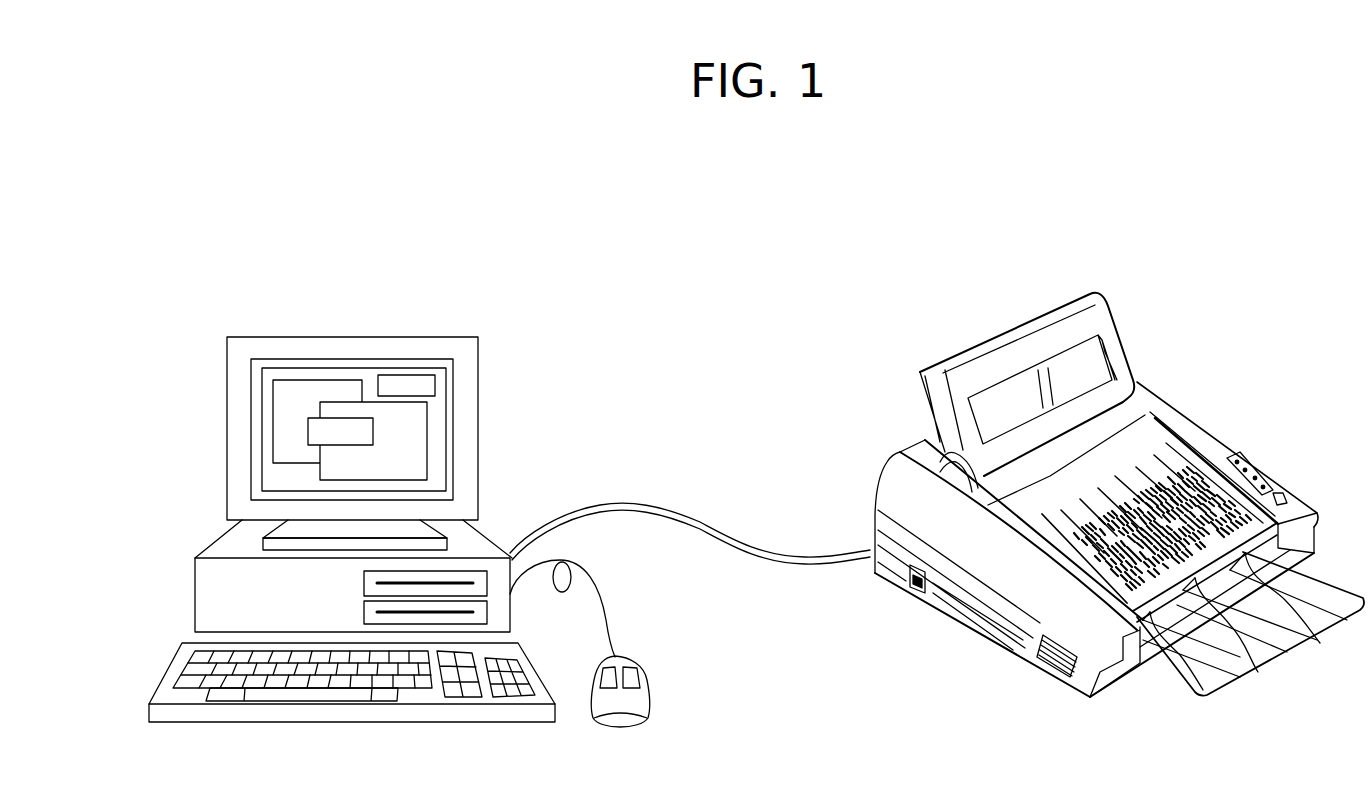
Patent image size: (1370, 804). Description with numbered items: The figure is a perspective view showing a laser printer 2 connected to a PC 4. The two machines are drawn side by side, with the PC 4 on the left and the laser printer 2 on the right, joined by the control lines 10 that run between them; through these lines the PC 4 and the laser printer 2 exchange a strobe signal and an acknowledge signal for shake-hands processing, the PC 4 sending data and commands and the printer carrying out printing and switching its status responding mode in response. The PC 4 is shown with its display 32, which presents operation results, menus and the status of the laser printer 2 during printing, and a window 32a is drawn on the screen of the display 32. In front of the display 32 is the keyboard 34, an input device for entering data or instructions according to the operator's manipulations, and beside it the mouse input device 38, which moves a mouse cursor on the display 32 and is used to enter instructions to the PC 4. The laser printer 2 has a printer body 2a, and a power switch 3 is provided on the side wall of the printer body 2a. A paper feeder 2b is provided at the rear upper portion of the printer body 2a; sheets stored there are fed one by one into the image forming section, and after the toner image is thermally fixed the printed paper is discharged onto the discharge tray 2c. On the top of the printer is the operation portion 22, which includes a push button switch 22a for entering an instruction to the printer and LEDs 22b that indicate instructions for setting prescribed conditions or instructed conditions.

The laser printer 2 is at (938, 273).
The printer body 2a is at (973, 600).
The paper feeder 2b is at (1063, 327).
The discharge tray 2c is at (1293, 633).
The power switch 3 is at (910, 590).
The PC 4 is at (480, 268).
The control lines 10 is at (713, 521).
The operation portion 22 is at (1233, 453).
The push button switch 22a is at (1283, 492).
The LEDs 22b is at (1252, 460).
The display 32 is at (481, 392).
The window 32a is at (315, 431).
The keyboard 34 is at (480, 721).
The mouse input device 38 is at (637, 670).